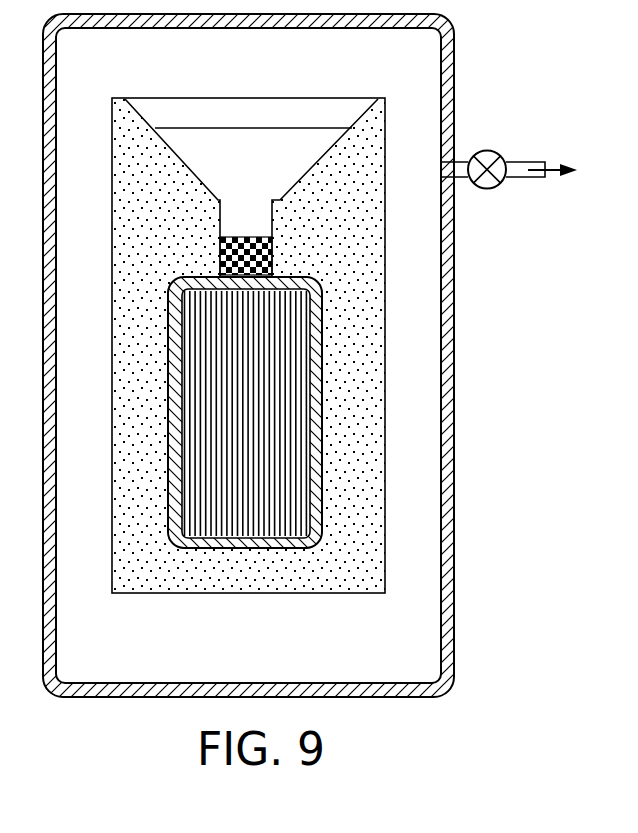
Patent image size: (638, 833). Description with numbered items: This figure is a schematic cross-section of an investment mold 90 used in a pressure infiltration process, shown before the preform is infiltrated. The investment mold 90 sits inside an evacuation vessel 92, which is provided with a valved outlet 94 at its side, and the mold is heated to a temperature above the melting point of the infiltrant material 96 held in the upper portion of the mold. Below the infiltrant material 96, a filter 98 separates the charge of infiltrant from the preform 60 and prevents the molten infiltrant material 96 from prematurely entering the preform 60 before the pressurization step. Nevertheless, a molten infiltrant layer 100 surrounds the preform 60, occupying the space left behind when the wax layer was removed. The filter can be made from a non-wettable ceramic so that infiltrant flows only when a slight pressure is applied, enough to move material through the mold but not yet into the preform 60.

The preform 60 is at (283, 526).
The investment mold 90 is at (374, 147).
The evacuation vessel 92 is at (472, 499).
The outlet valve 94 is at (569, 163).
The infiltrant material 96 is at (198, 128).
The filter 98 is at (262, 264).
The molten infiltrant layer 100 is at (313, 393).